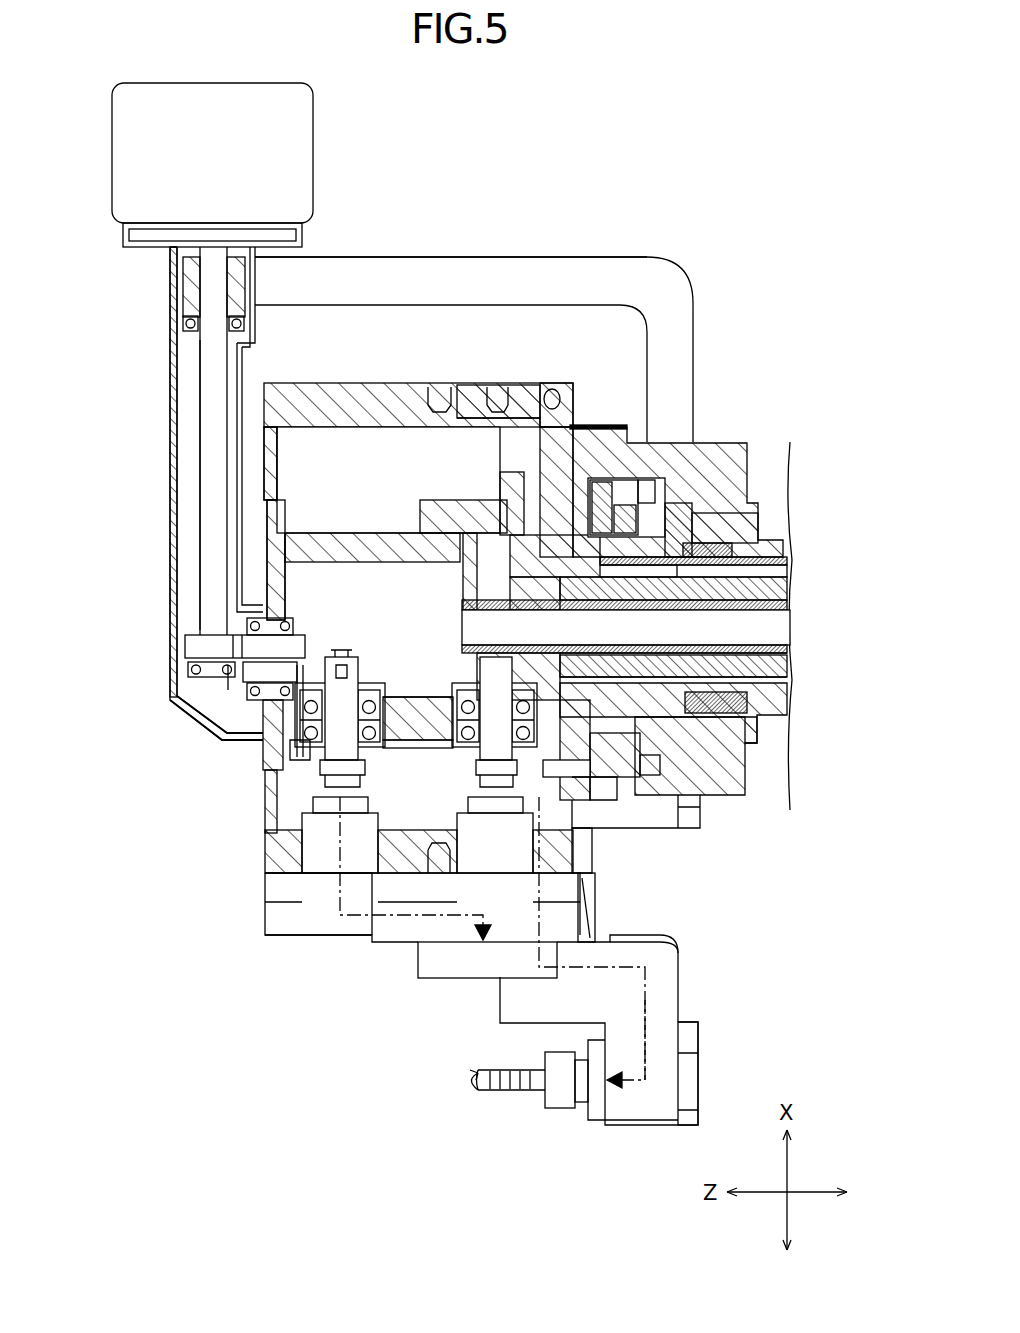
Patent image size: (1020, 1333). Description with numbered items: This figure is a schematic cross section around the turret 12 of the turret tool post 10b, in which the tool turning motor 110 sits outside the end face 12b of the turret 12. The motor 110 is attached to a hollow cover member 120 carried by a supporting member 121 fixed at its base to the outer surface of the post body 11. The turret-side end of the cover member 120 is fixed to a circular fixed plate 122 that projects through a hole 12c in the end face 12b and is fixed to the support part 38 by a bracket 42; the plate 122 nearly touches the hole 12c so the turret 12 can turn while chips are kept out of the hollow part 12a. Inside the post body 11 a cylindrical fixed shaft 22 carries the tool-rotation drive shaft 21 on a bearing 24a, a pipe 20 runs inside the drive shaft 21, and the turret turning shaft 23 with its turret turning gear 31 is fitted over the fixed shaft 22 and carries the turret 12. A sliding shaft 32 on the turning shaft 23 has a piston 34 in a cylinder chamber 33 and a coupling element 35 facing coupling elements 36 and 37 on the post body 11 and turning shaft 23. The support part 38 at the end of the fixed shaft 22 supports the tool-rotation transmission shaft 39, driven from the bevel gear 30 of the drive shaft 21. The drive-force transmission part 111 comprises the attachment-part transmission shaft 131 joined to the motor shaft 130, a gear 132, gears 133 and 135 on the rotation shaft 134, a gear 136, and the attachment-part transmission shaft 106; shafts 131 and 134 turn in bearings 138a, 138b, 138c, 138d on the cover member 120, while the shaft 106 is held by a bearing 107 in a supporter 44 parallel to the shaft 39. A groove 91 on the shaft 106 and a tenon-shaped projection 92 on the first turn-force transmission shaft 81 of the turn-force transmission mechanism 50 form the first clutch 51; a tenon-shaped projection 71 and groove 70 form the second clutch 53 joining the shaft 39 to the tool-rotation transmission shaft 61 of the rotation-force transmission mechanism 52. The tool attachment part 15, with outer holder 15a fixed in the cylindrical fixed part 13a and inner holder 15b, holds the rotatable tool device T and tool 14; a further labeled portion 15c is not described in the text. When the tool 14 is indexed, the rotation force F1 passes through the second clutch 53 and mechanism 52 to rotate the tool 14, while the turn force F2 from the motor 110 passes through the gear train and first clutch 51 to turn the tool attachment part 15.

The tool turning motor 110 is at (313, 140).
The turret tool post 10b is at (654, 252).
The supporting member 121 is at (522, 257).
The motor shaft 130 is at (208, 283).
The cover member 120 is at (173, 325).
The bearing 138a is at (188, 333).
The attachment-part transmission shaft 131 is at (203, 410).
The turret 12 is at (318, 380).
The hollow part 12a is at (415, 460).
The hole 12c is at (266, 500).
The fixed plate 122 is at (266, 520).
The bracket 42 is at (357, 545).
The bevel gear 30 is at (490, 520).
The support part 38 is at (470, 530).
The coupling element 36 is at (596, 425).
The cylinder chamber 33 is at (617, 480).
The post body 11 is at (717, 425).
The piston 34 is at (735, 500).
The sliding shaft 32 is at (790, 560).
The pipe 20 is at (790, 620).
The tool-rotation drive shaft 21 is at (790, 600).
The fixed shaft 22 is at (790, 660).
The turret turning shaft 23 is at (790, 690).
The gear 132 is at (186, 645).
The bearing 138c is at (248, 625).
The gear 133 is at (250, 665).
The bearing 138b is at (190, 670).
The bearing 138d is at (255, 700).
The drive-force transmission part 111 is at (200, 700).
The gear 135 is at (230, 690).
The rotation shaft 134 is at (265, 772).
The end face 12b is at (265, 795).
The attachment-part transmission shaft 106 is at (300, 745).
The groove 91 is at (320, 720).
The tenon-shaped projection 92 is at (335, 760).
The first turn-force transmission shaft 81 is at (340, 770).
The gear 136 is at (385, 700).
The bearing 107 is at (395, 745).
The supporter 44 is at (430, 697).
The tenon-shaped projection 71 is at (490, 720).
The groove 70 is at (470, 790).
The second clutch 53 is at (468, 795).
The first clutch 51 is at (330, 810).
The tool attachment part 15 is at (360, 980).
The outer holder 15a is at (300, 940).
The turn-force transmission mechanism 50 is at (330, 920).
The inner holder 15b is at (575, 945).
The tool-rotation transmission shaft 61 is at (585, 900).
The base portion 15c is at (625, 948).
The rotation-force transmission mechanism 52 is at (560, 900).
The turn force F2 is at (397, 960).
The rotatable tool device T is at (688, 980).
The rotation force F1 is at (647, 1040).
The tool 14 is at (505, 1092).
The coupling element 35 is at (740, 775).
The coupling element 37 is at (640, 770).
The bearing 24a is at (700, 713).
The turret turning gear 31 is at (645, 780).
The tool-rotation transmission shaft 39 is at (595, 795).
The fixed part 13a is at (590, 860).